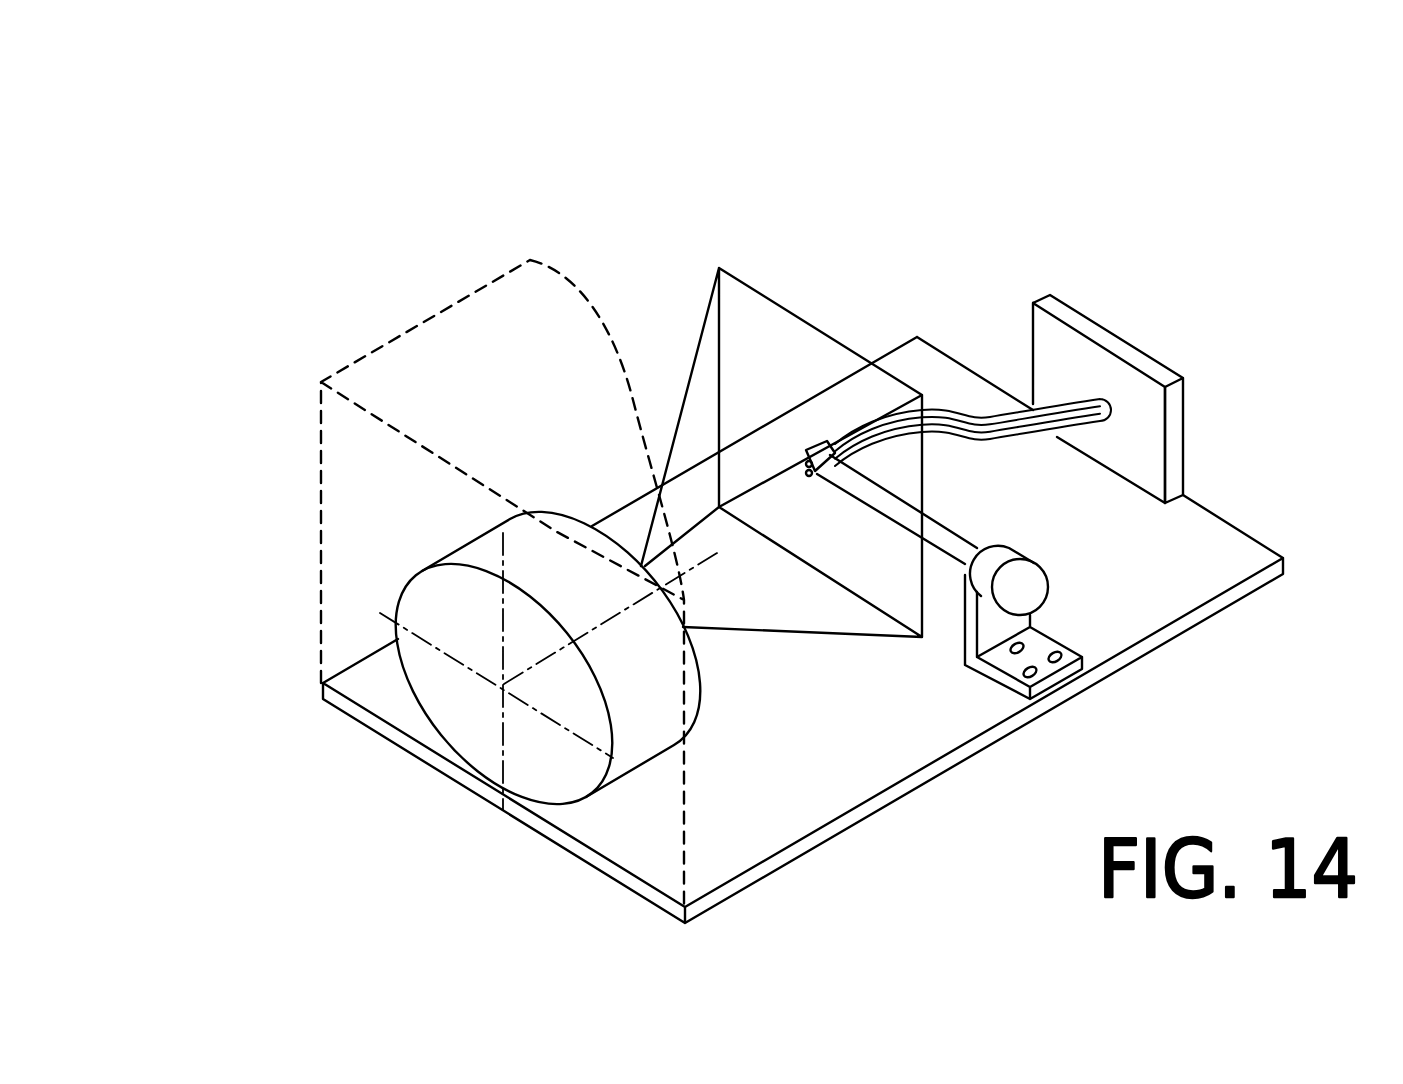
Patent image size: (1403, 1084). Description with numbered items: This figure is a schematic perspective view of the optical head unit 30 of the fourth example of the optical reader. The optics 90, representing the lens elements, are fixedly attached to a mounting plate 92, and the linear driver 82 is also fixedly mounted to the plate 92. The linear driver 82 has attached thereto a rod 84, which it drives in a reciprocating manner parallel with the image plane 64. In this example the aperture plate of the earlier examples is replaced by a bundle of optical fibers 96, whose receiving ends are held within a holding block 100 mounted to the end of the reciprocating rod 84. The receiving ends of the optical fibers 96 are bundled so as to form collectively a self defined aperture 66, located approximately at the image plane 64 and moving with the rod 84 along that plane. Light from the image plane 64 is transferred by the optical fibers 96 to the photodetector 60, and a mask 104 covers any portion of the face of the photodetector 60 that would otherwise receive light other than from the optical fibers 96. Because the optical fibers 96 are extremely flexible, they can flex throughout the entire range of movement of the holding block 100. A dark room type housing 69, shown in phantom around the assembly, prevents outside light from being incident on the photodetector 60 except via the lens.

The optical head unit 30 is at (398, 258).
The photodetector 60 is at (1107, 332).
The image plane 64 is at (766, 297).
The aperture 66 is at (782, 461).
The dark room type housing 69 is at (408, 373).
The linear driver 82 is at (1028, 590).
The rod 84 is at (940, 532).
The optics 90 is at (477, 538).
The mounting plate 92 is at (820, 771).
The optical fibers 96 is at (980, 413).
The holding block 100 is at (820, 440).
The mask 104 is at (1153, 410).